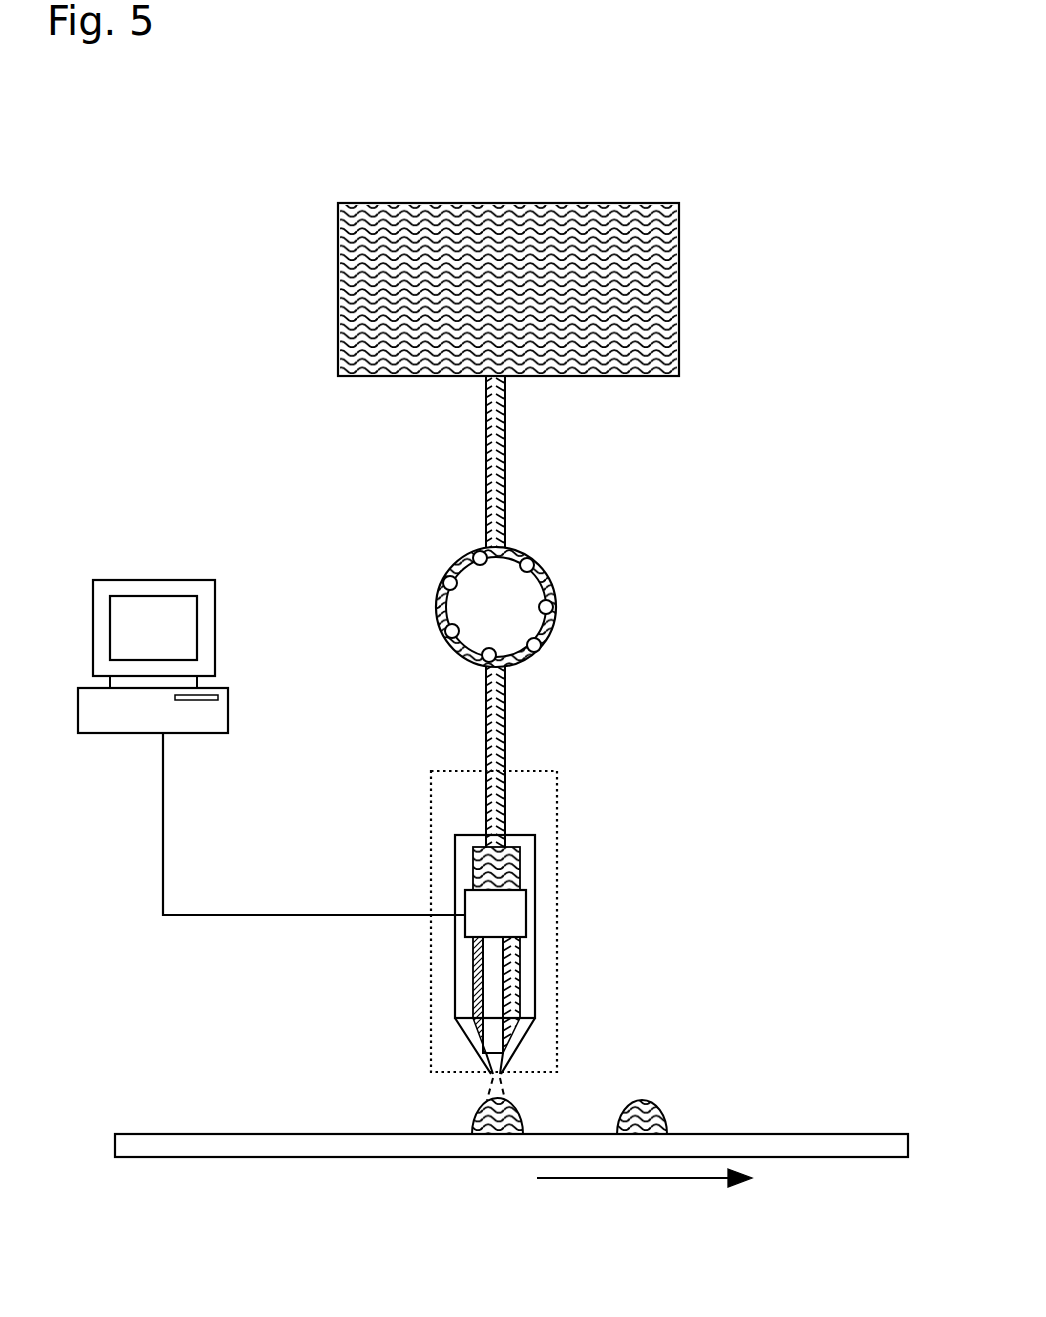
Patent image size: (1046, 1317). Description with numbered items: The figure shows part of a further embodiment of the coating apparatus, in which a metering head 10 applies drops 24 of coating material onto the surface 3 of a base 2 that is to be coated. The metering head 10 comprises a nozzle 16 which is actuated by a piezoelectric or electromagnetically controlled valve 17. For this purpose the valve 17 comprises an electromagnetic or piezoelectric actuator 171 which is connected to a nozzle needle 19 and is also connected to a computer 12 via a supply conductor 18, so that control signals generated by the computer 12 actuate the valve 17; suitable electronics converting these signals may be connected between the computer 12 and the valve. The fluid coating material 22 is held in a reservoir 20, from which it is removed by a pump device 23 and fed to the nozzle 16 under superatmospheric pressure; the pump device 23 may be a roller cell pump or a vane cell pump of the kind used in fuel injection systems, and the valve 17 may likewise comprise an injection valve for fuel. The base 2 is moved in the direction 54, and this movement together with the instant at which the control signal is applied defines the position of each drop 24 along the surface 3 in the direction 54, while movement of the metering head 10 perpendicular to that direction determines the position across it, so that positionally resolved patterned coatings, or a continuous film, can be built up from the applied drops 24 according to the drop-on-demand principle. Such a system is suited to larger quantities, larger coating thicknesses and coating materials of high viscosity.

The base 2 is at (232, 1157).
The surface 3 is at (185, 1134).
The metering head 10 is at (557, 875).
The computer 12 is at (230, 698).
The nozzle 16 is at (493, 1074).
The valve 17 is at (455, 868).
The actuator 171 is at (528, 928).
The supply conductor 18 is at (163, 895).
The nozzle needle 19 is at (492, 997).
The reservoir 20 is at (680, 300).
The fluid coating material 22 is at (535, 282).
The pump device 23 is at (556, 612).
The drop 24 is at (522, 1128).
The direction 54 is at (633, 1178).